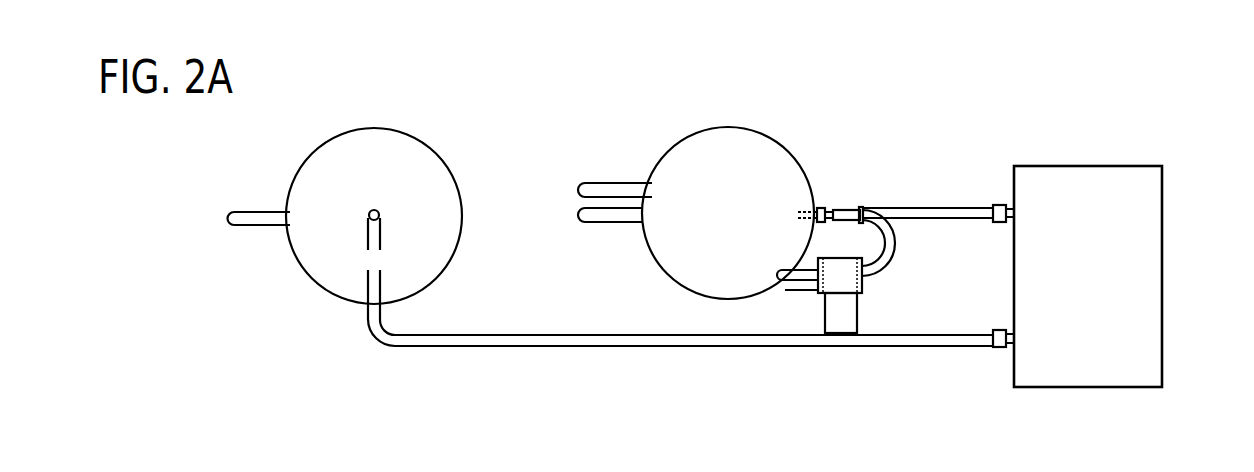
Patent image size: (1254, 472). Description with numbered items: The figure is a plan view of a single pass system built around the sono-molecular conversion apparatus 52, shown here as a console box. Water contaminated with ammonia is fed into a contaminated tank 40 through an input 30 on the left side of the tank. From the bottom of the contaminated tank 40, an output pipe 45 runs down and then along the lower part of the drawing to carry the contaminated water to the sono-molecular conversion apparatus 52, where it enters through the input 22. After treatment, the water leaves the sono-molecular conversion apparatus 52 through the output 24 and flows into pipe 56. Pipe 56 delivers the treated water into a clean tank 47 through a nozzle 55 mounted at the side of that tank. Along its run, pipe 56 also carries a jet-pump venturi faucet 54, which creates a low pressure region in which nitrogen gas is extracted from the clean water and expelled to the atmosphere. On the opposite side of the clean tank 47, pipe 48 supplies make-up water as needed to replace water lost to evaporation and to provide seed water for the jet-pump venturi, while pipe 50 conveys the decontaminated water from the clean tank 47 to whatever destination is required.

The input 30 is at (229, 220).
The contaminated tank 40 is at (406, 148).
The output pipe 45 is at (367, 320).
The clean tank 47 is at (723, 138).
The pipe 48 is at (610, 183).
The pipe 50 is at (602, 222).
The nozzle 55 is at (795, 215).
The jet-pump venturi faucet 54 is at (820, 304).
The pipe 56 is at (943, 221).
The sono-molecular conversion apparatus 52 is at (1163, 201).
The output 24 is at (1018, 213).
The input 22 is at (1018, 338).